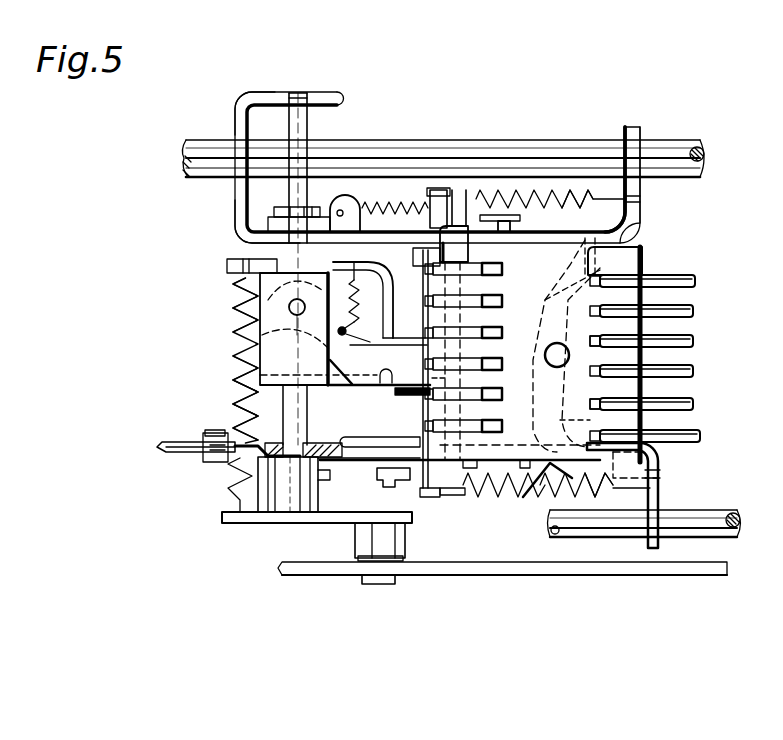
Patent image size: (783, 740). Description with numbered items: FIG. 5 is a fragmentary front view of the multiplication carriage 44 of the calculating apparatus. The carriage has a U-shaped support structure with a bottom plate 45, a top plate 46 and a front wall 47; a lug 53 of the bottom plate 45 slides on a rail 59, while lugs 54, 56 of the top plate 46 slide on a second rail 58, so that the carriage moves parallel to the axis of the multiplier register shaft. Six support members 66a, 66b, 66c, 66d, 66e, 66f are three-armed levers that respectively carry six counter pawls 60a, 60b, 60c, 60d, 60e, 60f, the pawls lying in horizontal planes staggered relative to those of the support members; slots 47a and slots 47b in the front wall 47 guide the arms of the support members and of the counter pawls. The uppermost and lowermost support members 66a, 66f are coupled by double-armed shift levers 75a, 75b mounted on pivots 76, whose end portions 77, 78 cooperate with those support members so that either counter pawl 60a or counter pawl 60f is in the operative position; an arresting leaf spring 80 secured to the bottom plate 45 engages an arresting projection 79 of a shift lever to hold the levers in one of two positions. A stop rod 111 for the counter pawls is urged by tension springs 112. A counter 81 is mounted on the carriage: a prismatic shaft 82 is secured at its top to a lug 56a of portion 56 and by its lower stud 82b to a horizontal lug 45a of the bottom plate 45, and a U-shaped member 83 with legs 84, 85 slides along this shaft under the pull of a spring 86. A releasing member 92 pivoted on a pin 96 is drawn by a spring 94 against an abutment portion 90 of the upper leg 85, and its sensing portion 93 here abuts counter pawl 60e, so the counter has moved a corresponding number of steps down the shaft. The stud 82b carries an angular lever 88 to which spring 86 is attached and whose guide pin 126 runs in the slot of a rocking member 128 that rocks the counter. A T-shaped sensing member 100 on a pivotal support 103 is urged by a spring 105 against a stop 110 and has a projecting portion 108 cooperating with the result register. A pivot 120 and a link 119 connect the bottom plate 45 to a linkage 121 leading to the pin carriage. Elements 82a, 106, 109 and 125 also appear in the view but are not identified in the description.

The multiplication carriage 44 is at (214, 321).
The bottom plate 45 is at (640, 478).
The horizontal lug 45a is at (262, 525).
The top plate 46 is at (240, 243).
The front wall 47 is at (645, 268).
The slots 47a is at (595, 342).
The slots 47b is at (490, 495).
The lug 53 is at (655, 550).
The lug 54 is at (645, 222).
The lug 56 is at (235, 203).
The lug 56a is at (250, 100).
The second rail 58 is at (677, 160).
The rail 59 is at (715, 525).
The counter pawl 60a is at (432, 268).
The counter pawl 60b is at (480, 300).
The counter pawl 60c is at (465, 333).
The counter pawl 60d is at (462, 365).
The counter pawl 60e is at (432, 395).
The counter pawl 60f is at (430, 427).
The support member 66a is at (697, 285).
The support member 66b is at (697, 312).
The support member 66c is at (697, 340).
The support member 66d is at (697, 375).
The support member 66e is at (697, 410).
The support member 66f is at (700, 445).
The shift lever 75a is at (530, 442).
The shift lever 75b is at (545, 408).
The pivots 76 is at (553, 352).
The end portion 77 is at (592, 268).
The end portion 78 is at (592, 421).
The arresting projection 79 is at (533, 500).
The arresting leaf spring 80 is at (565, 500).
The counter 81 is at (236, 284).
The prismatic shaft 82 is at (308, 128).
The plunger head 82a is at (300, 105).
The lower stud 82b is at (235, 440).
The U-shaped member 83 is at (262, 352).
The lower leg 84 is at (243, 402).
The upper leg 85 is at (238, 263).
The spring 86 is at (230, 416).
The angular lever 88 is at (338, 517).
The abutment portion 90 is at (384, 340).
The releasing member 92 is at (243, 378).
The sensing end portion 93 is at (445, 378).
The spring 94 is at (357, 308).
The pivot pin 96 is at (240, 318).
The sensing member 100 is at (385, 205).
The pivotal support 103 is at (282, 212).
The spring 105 is at (418, 200).
The actuator pin 106 is at (458, 262).
The projecting portion 108 is at (472, 232).
The stop 109 is at (512, 228).
The stop 110 is at (517, 223).
The stop rod 111 is at (425, 470).
The tension springs 112 is at (565, 192).
The link 119 is at (222, 462).
The pivot 120 is at (388, 483).
The linkage 121 is at (165, 452).
The nut 125 is at (393, 540).
The guide pin 126 is at (375, 584).
The rocking member 128 is at (488, 568).